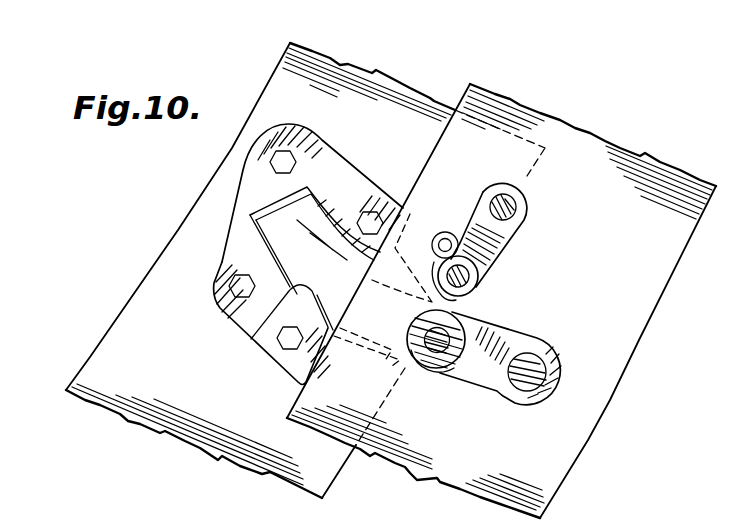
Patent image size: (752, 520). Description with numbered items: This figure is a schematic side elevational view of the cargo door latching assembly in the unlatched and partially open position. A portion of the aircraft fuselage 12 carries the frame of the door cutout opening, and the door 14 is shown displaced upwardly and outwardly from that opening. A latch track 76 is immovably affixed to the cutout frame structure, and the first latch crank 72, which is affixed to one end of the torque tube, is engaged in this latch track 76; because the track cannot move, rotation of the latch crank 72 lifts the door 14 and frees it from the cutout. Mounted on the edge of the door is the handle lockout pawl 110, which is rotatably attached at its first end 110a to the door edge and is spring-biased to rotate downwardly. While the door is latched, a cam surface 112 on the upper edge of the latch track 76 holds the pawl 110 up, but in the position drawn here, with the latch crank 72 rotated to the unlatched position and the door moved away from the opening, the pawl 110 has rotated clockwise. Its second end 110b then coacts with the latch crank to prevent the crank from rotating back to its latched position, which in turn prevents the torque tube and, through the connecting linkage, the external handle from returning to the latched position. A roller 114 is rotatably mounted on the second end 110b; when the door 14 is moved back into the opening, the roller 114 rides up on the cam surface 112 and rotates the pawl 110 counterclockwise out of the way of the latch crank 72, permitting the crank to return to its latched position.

The fuselage 12 is at (323, 52).
The door 14 is at (589, 134).
The first latch crank 72 is at (500, 396).
The latch track 76 is at (253, 337).
The handle lockout pawl 110 is at (478, 224).
The first end of lockout pawl 110a is at (528, 213).
The second end of lockout pawl 110b is at (447, 303).
The cam surface 112 is at (338, 220).
The roller 114 is at (477, 283).